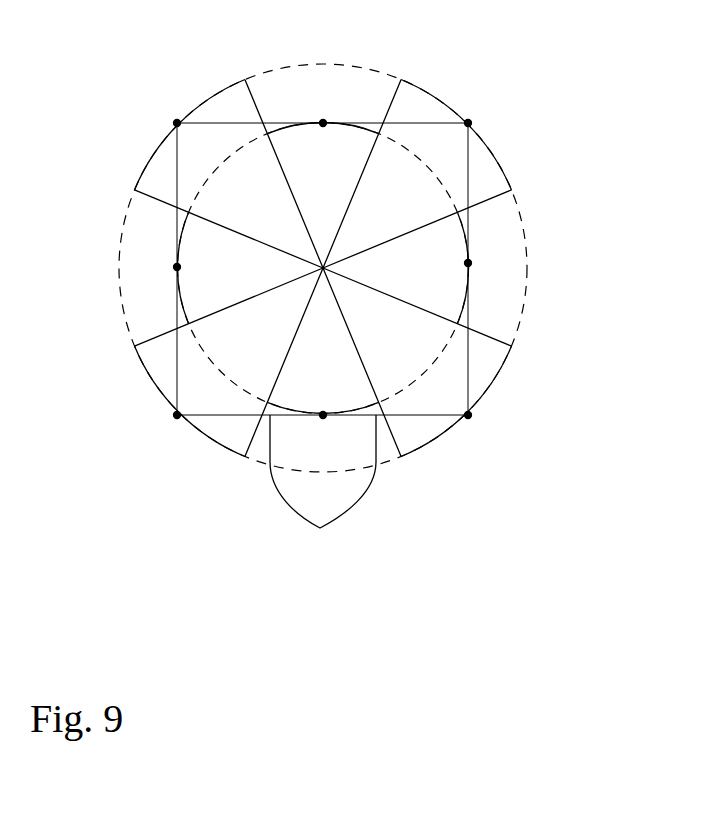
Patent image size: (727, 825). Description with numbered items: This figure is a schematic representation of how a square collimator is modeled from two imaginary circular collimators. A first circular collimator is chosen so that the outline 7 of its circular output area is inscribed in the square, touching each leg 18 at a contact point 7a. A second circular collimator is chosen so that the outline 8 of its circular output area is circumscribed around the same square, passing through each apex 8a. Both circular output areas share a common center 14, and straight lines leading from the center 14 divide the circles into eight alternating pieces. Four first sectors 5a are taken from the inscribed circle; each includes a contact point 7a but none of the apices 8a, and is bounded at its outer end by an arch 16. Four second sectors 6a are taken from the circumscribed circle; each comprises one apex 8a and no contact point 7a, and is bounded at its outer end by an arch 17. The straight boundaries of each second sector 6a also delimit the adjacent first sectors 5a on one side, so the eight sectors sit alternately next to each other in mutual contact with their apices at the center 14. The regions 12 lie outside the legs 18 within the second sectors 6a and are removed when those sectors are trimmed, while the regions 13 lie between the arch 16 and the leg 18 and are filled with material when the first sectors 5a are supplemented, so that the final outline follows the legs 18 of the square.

The first sector 5a is at (347, 163).
The second sector 6a is at (197, 168).
The outline of the circular output area of the first circular collimator 7 is at (442, 105).
The contact point 7a is at (322, 123).
The outline of the circular output area of the second circular collimator 8 is at (517, 335).
The apex of the square 8a is at (177, 123).
The region 12 is at (158, 174).
The region 13 is at (323, 485).
The center 14 is at (325, 265).
The arch 16 is at (415, 153).
The arch 17 is at (146, 174).
The leg 18 is at (272, 122).